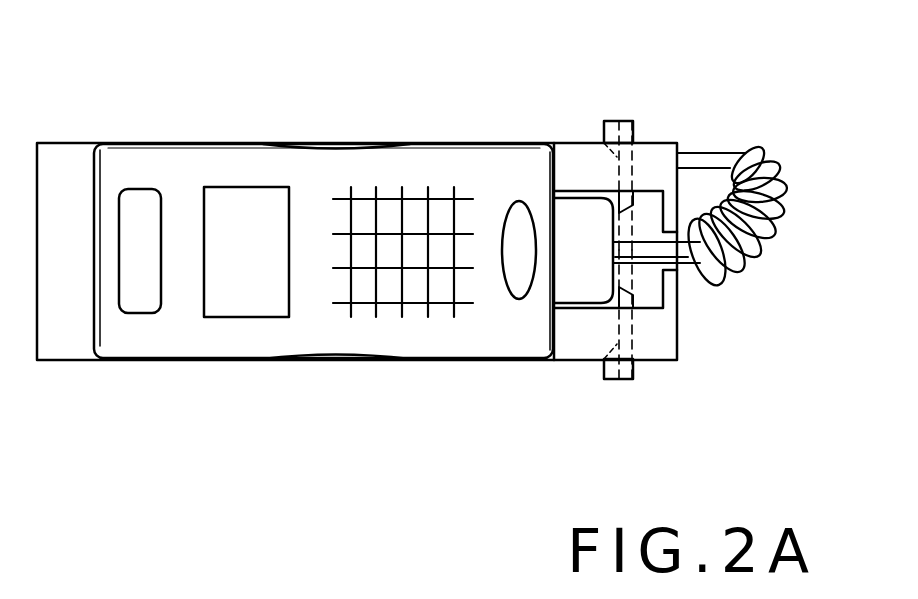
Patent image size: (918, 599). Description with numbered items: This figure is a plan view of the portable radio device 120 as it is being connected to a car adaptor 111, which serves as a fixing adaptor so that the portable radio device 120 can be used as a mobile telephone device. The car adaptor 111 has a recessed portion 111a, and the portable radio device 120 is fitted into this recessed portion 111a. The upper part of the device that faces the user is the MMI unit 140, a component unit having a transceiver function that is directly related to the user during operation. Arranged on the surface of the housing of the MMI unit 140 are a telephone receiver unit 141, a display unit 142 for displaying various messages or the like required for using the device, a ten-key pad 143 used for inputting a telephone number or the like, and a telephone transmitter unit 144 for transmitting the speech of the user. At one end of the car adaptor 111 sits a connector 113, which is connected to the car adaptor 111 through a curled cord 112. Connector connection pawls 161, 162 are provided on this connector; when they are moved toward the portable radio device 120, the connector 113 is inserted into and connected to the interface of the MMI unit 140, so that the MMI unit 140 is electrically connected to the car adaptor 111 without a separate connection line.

The portable radio device 120 is at (252, 118).
The car adaptor 111 is at (60, 165).
The recessed portion 111a is at (97, 182).
The MMI unit 140 is at (470, 162).
The telephone receiver unit 141 is at (138, 302).
The display unit 142 is at (231, 293).
The ten-key pad 143 is at (417, 188).
The telephone transmitter unit 144 is at (515, 282).
The connector 113 is at (577, 277).
The connector connection pawl 161 is at (618, 130).
The connector connection pawl 162 is at (622, 382).
The curled cord 112 is at (748, 287).